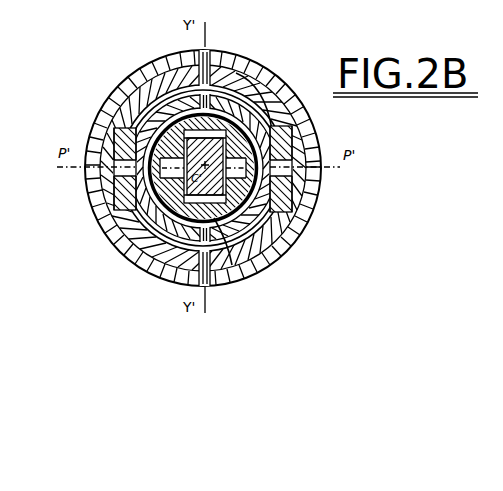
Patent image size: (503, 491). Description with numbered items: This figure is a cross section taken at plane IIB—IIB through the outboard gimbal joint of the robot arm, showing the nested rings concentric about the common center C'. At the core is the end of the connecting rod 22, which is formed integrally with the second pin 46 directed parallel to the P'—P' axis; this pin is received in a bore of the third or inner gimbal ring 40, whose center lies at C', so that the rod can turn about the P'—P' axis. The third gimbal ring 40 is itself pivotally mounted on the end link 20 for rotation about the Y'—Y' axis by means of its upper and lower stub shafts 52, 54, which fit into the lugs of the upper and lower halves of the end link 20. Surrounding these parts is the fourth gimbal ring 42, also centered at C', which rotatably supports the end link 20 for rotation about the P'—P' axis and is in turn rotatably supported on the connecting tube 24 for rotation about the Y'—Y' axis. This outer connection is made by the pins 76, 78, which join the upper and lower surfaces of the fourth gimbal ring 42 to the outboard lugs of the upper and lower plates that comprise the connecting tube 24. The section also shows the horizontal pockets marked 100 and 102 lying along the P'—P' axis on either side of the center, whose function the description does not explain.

The end link 20 is at (158, 125).
The connecting rod 22 is at (130, 253).
The connecting tube 24 is at (137, 76).
The third gimbal ring 40 is at (240, 207).
The fourth gimbal ring 42 is at (275, 76).
The second pin 46 is at (158, 178).
The upper stub shaft 52 is at (234, 72).
The lower stub shaft 54 is at (228, 258).
The pin 76 is at (214, 48).
The pin 78 is at (198, 277).
The left guide block 100 is at (118, 176).
The right guide block 102 is at (290, 181).